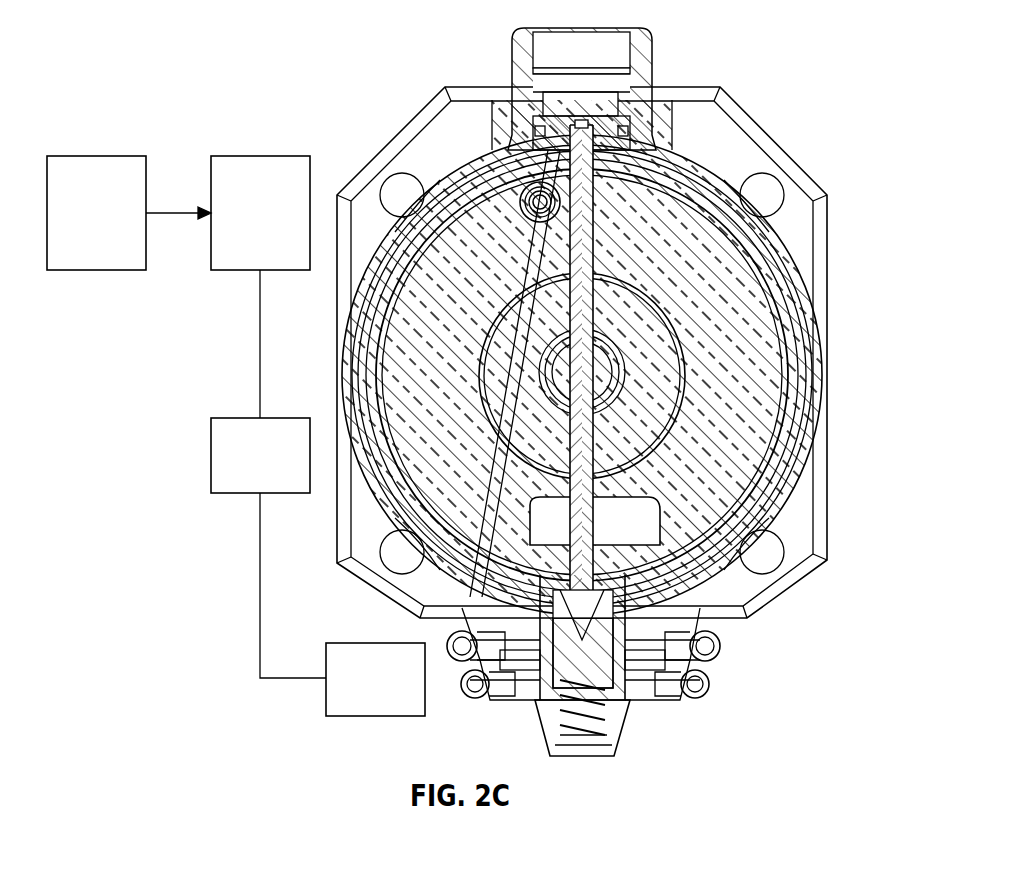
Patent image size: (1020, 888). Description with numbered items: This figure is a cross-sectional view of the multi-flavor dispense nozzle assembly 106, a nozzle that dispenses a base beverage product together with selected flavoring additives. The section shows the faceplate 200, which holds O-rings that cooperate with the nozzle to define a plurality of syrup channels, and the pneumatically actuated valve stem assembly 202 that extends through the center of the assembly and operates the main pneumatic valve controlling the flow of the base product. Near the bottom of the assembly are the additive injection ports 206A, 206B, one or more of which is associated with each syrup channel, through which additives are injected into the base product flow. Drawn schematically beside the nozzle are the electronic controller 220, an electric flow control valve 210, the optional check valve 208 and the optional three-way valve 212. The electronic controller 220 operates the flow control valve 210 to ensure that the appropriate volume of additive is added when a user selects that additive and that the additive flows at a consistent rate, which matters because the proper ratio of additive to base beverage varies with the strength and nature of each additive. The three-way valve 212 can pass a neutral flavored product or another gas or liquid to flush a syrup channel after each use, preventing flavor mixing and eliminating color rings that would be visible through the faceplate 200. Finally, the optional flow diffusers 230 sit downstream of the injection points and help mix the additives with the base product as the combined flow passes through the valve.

The multi-flavor dispense nozzle assembly 106 is at (450, 36).
The faceplate 200 is at (738, 304).
The valve stem assembly 202 is at (597, 237).
The additive injection port 206A is at (705, 652).
The additive injection port 206B is at (690, 682).
The check valve 208 is at (211, 455).
The flow control valve 210 is at (258, 156).
The three-way valve 212 is at (375, 643).
The electronic controller 220 is at (97, 156).
The flow diffusers 230 is at (625, 712).